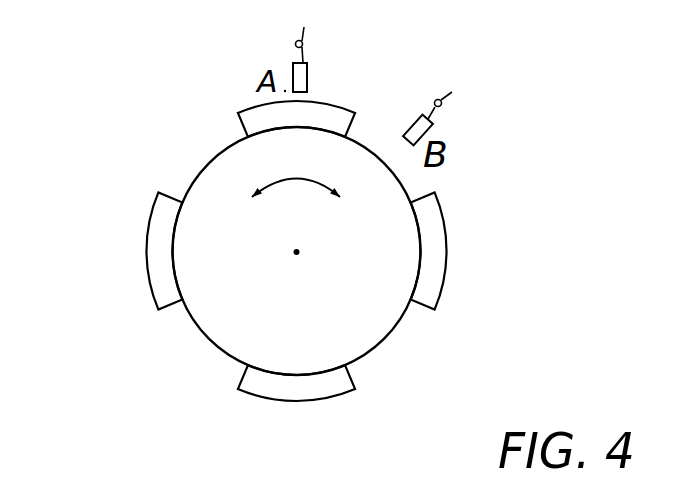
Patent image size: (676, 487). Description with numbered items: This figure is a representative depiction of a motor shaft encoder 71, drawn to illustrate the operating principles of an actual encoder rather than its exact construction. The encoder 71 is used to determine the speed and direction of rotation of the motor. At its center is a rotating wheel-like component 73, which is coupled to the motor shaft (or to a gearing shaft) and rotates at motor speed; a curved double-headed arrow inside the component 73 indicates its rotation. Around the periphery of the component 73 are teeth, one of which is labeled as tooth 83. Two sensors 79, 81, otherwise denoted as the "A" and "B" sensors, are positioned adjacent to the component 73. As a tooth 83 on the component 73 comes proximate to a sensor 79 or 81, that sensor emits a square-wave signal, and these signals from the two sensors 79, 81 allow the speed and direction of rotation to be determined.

The encoder 71 is at (118, 176).
The rotating wheel-like component 73 is at (363, 335).
The sensor 79 is at (300, 75).
The sensor 81 is at (415, 108).
The tooth 83 is at (257, 112).